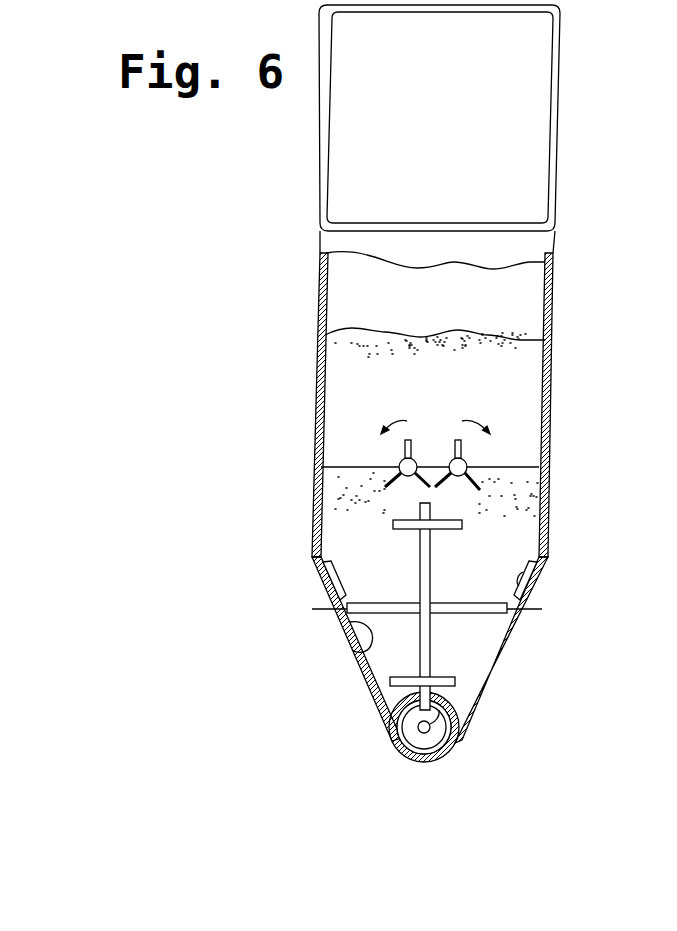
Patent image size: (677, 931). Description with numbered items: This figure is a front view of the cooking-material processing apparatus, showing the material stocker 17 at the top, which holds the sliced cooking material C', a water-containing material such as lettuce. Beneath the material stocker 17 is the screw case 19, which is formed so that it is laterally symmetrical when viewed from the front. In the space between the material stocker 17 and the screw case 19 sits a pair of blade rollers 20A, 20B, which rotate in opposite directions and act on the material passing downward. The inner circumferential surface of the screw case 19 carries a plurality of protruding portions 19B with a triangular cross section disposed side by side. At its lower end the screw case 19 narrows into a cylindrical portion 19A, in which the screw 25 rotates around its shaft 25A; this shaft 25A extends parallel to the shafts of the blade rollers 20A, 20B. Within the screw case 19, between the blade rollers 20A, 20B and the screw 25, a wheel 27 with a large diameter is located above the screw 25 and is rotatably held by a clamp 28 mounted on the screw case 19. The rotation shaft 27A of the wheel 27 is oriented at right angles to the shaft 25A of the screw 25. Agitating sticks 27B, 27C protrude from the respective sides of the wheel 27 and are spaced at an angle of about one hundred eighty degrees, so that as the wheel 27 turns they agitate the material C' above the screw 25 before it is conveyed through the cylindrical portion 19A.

The material stocker 17 is at (553, 277).
The sliced cooking material C' is at (387, 315).
The screw case 19 is at (548, 504).
The cylindrical portion 19A is at (400, 749).
The protruding portions 19B is at (352, 628).
The blade roller 20A is at (406, 455).
The blade roller 20B is at (461, 455).
The screw 25 is at (440, 737).
The shaft 25A is at (425, 733).
The wheel 27 is at (430, 566).
The rotation shaft 27A is at (483, 613).
The agitating stick 27B is at (455, 530).
The agitating stick 27C is at (447, 675).
The clamp 28 is at (541, 607).